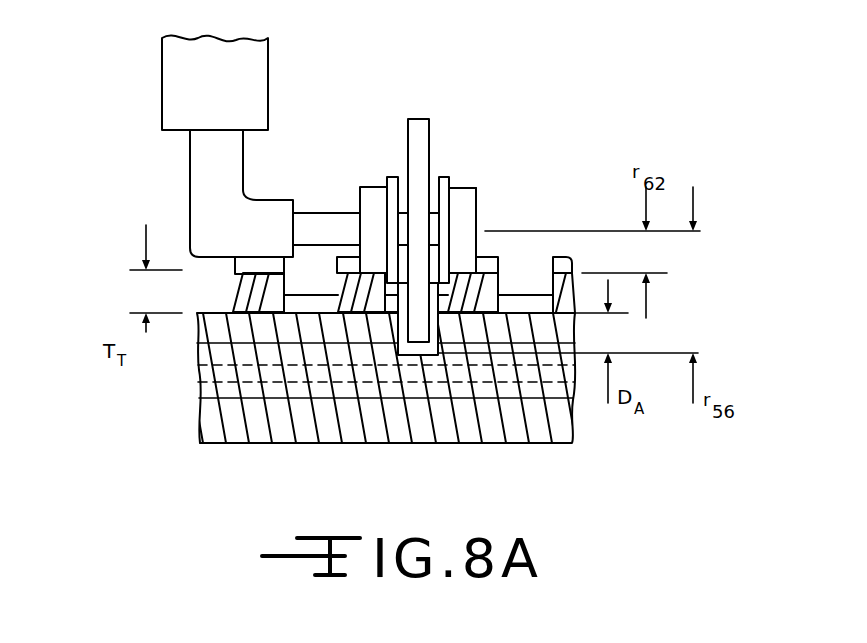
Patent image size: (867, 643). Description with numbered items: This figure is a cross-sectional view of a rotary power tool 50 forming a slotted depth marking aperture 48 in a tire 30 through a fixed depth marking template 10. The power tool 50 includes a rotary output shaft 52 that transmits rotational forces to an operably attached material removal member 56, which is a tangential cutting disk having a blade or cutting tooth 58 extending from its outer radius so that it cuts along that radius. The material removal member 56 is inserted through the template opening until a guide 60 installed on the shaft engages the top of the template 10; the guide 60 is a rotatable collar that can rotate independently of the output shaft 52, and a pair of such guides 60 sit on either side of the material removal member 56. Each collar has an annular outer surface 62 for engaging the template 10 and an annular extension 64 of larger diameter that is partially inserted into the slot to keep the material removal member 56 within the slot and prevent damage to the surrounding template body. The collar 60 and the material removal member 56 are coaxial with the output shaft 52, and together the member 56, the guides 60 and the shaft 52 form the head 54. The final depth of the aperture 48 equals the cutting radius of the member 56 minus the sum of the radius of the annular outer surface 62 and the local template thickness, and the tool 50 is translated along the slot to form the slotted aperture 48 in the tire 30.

The template 10 is at (232, 288).
The tire 30 is at (257, 445).
The depth marking aperture 48 is at (398, 316).
The rotary power tool 50 is at (162, 69).
The rotary output shaft 52 is at (327, 213).
The head 54 is at (530, 117).
The material removal member 56 is at (408, 150).
The blade 58 is at (418, 353).
The guide 60 is at (477, 203).
The annular outer surface 62 is at (462, 187).
The annular extension 64 is at (441, 176).